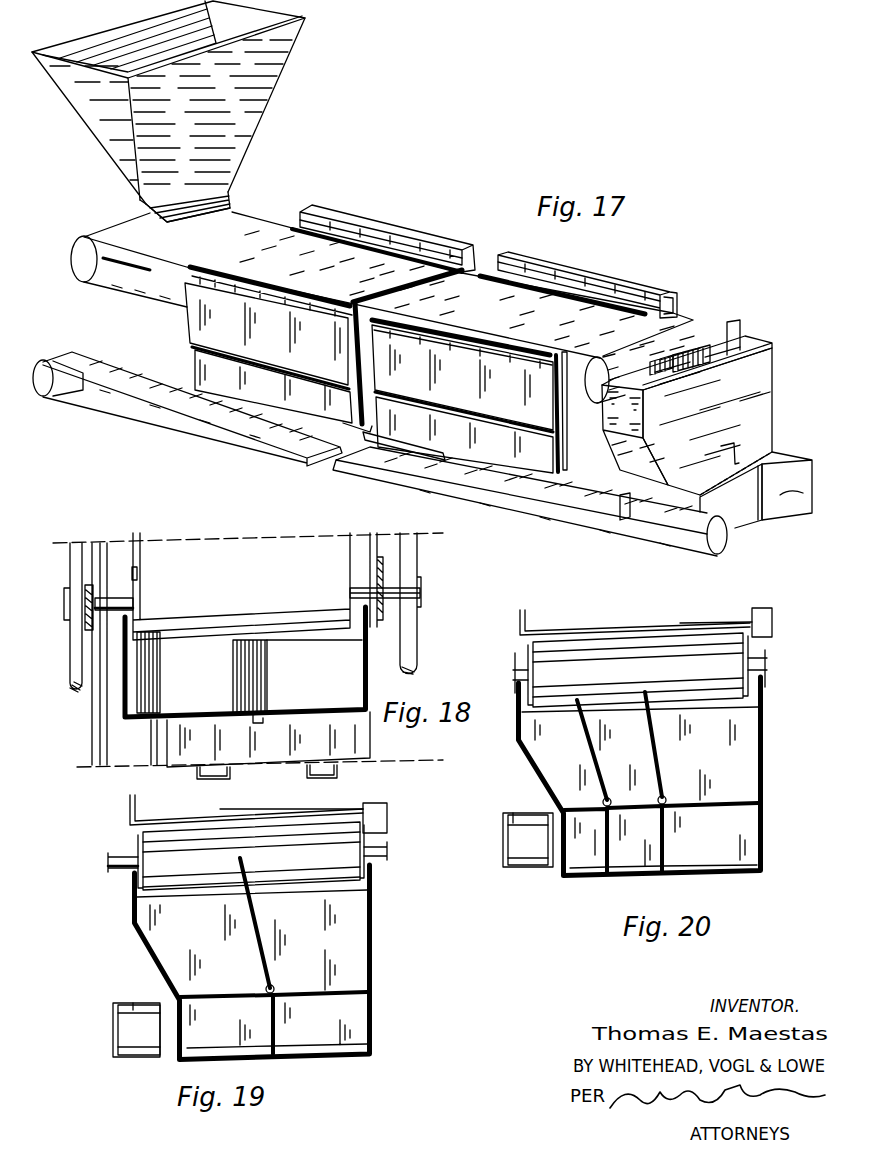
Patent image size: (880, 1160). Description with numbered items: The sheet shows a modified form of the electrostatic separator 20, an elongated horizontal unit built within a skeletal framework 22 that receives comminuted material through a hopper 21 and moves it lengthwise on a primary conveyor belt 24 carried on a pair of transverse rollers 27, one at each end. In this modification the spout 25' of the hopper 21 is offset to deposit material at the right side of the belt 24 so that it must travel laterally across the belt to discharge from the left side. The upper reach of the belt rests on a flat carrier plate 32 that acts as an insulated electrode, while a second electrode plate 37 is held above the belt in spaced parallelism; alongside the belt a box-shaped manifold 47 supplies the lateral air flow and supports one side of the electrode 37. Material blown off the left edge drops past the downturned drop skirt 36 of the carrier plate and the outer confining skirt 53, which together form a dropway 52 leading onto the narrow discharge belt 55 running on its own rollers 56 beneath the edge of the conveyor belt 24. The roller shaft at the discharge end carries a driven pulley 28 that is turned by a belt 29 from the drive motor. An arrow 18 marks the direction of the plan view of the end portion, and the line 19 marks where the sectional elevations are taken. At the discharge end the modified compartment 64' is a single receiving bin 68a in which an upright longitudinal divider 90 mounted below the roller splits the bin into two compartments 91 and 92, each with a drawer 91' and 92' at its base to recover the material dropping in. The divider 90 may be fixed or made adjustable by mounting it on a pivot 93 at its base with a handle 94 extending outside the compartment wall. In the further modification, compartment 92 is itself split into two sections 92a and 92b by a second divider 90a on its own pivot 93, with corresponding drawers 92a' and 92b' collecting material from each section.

In FIG. 17, the hopper 21 is at (282, 42).
In FIG. 17, the spout 25' is at (213, 188).
In FIG. 17, the primary conveyor belt 24 is at (253, 220).
In FIG. 18, the primary conveyor belt 24 is at (241, 586).
In FIG. 19, the primary conveyor belt 24 is at (251, 856).
In FIG. 20, the primary conveyor belt 24 is at (638, 670).
In FIG. 17, the electrostatic separator 20 is at (400, 194).
In FIG. 17, the transverse rollers 27 is at (83, 263).
In FIG. 18, the transverse rollers 27 is at (350, 570).
In FIG. 19, the transverse rollers 27 is at (364, 841).
In FIG. 20, the transverse rollers 27 is at (767, 662).
In FIG. 17, the drop skirt 36 is at (208, 280).
In FIG. 17, the upper electrode plate 37 is at (367, 238).
In FIG. 19, the upper electrode plate 37 is at (234, 812).
In FIG. 20, the upper electrode plate 37 is at (715, 622).
In FIG. 17, the carrier plate 32 is at (377, 294).
In FIG. 17, the manifold 47 is at (561, 264).
In FIG. 19, the manifold 47 is at (378, 814).
In FIG. 20, the manifold 47 is at (768, 618).
In FIG. 17, the viewing arrow 18 is at (732, 256).
In FIG. 18, the section line 19 is at (391, 654).
In FIG. 17, the confining skirt 53 is at (458, 396).
In FIG. 17, the dropway 52 is at (559, 418).
In FIG. 17, the discharge belt 55 is at (507, 504).
In FIG. 18, the discharge belt 55 is at (140, 742).
In FIG. 19, the discharge belt 55 is at (133, 1003).
In FIG. 20, the discharge belt 55 is at (513, 813).
In FIG. 17, the rollers 56 is at (40, 396).
In FIG. 19, the rollers 56 is at (113, 1024).
In FIG. 20, the rollers 56 is at (503, 849).
In FIG. 18, the skeletal framework 22 is at (70, 646).
In FIG. 18, the driven pulley 28 is at (383, 577).
In FIG. 18, the belt 29 is at (383, 535).
In FIG. 17, the receiving bin 68a is at (771, 343).
In FIG. 18, the receiving bin 68a is at (227, 728).
In FIG. 19, the receiving bin 68a is at (153, 918).
In FIG. 20, the receiving bin 68a is at (748, 756).
In FIG. 17, the modified compartment 64' is at (729, 421).
In FIG. 18, the modified compartment 64' is at (287, 739).
In FIG. 17, the divider 90 is at (705, 339).
In FIG. 18, the divider 90 is at (245, 653).
In FIG. 19, the divider 90 is at (258, 947).
In FIG. 20, the divider 90 is at (660, 762).
In FIG. 20, the second divider 90a is at (600, 767).
In FIG. 17, the compartment 91 is at (746, 331).
In FIG. 18, the compartment 91 is at (314, 650).
In FIG. 19, the compartment 91 is at (296, 913).
In FIG. 20, the compartment 91 is at (704, 718).
In FIG. 17, the compartment 92 is at (657, 354).
In FIG. 18, the compartment 92 is at (170, 672).
In FIG. 19, the compartment 92 is at (203, 925).
In FIG. 20, the section 92a is at (629, 720).
In FIG. 20, the section 92b is at (562, 750).
In FIG. 19, the pivot 93 is at (277, 987).
In FIG. 20, the pivot 93 is at (612, 801).
In FIG. 17, the handle 94 is at (727, 455).
In FIG. 18, the handle 94 is at (260, 724).
In FIG. 17, the drawer 91' is at (789, 498).
In FIG. 18, the drawer 91' is at (339, 776).
In FIG. 19, the drawer 91' is at (320, 1023).
In FIG. 20, the drawer 91' is at (710, 834).
In FIG. 17, the drawer 92' is at (744, 507).
In FIG. 18, the drawer 92' is at (202, 782).
In FIG. 19, the drawer 92' is at (226, 1021).
In FIG. 20, the drawer 92a' is at (634, 856).
In FIG. 20, the drawer 92b' is at (582, 858).